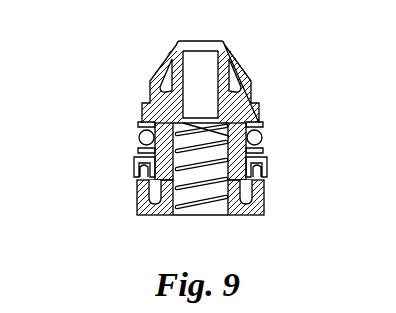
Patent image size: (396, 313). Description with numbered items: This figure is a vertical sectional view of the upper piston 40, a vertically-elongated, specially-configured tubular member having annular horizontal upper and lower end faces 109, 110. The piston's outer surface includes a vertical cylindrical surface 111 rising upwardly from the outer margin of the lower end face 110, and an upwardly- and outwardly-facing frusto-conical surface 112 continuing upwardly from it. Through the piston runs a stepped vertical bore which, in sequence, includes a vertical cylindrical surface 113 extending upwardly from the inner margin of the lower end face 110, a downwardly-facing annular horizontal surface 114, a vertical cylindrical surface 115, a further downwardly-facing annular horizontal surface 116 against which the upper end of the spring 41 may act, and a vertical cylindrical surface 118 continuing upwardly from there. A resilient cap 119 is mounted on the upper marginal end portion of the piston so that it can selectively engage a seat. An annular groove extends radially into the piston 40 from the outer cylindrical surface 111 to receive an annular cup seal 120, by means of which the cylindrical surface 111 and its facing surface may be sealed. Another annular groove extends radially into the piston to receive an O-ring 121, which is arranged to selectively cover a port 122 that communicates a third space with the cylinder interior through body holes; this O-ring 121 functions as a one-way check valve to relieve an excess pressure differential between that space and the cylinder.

The upper piston 40 is at (110, 146).
The spring 41 is at (172, 190).
The upper end face 109 is at (212, 33).
The lower end face 110 is at (246, 218).
The vertical cylindrical surface 111 is at (272, 205).
The frusto-conical surface 112 is at (240, 65).
The vertical cylindrical surface 113 is at (168, 217).
The downwardly-facing annular horizontal surface 114 is at (243, 194).
The vertical cylindrical surface 115 is at (138, 182).
The downwardly-facing annular horizontal surface 116 is at (263, 121).
The vertical cylindrical surface 118 is at (197, 51).
The resilient cap 119 is at (155, 71).
The annular cup seal 120 is at (268, 163).
The O-ring 121 is at (263, 138).
The port 122 is at (143, 124).